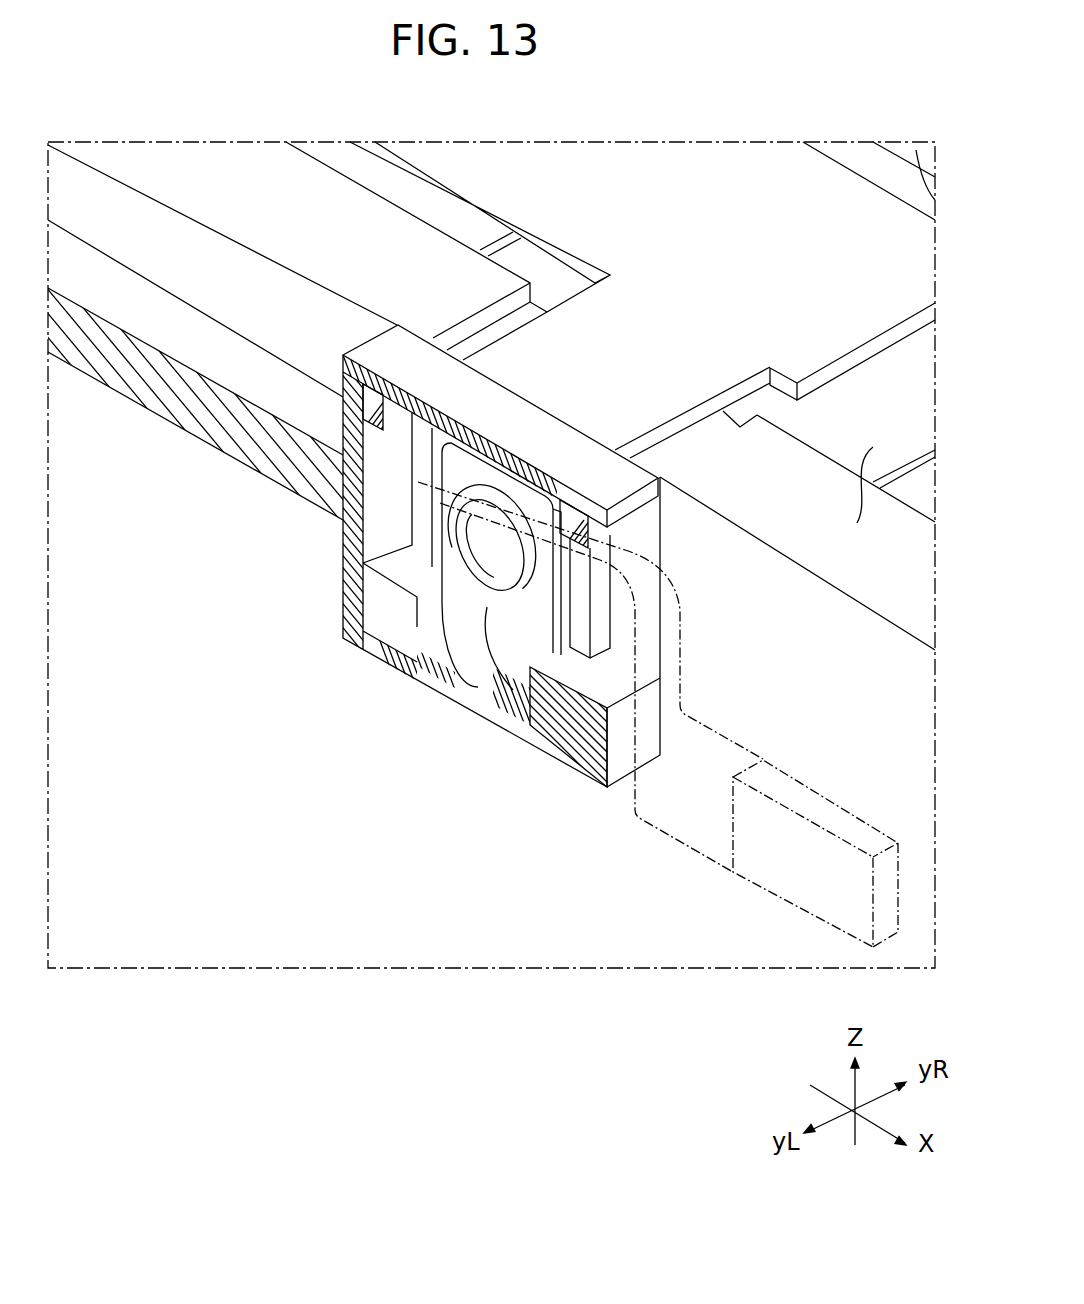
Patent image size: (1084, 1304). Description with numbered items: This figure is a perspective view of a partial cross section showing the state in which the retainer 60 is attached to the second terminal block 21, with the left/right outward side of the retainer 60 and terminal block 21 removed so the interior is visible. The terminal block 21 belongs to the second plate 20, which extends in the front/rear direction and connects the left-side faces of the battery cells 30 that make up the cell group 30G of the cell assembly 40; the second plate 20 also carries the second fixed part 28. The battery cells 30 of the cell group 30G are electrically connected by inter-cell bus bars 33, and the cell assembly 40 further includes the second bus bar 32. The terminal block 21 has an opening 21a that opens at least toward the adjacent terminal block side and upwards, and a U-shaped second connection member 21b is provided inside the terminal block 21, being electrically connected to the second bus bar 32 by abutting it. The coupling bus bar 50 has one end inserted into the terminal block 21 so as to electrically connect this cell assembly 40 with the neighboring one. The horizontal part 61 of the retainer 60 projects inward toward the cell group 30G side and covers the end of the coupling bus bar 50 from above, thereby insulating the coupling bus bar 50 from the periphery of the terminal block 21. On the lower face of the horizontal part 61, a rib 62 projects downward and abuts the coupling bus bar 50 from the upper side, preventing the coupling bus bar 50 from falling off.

The second plate 20 is at (228, 947).
The second terminal block 21 is at (565, 747).
The opening 21a is at (640, 540).
The second connection member 21b is at (440, 652).
The second fixed part 28 is at (194, 430).
The battery cell 30 is at (913, 488).
The cell group 30G is at (808, 430).
The second bus bar 32 is at (847, 325).
The inter-cell bus bar 33 is at (917, 150).
The cell assembly 40 is at (344, 158).
The coupling bus bar 50 is at (818, 800).
The retainer 60 is at (499, 398).
The horizontal part 61 is at (518, 408).
The rib 62 is at (362, 400).